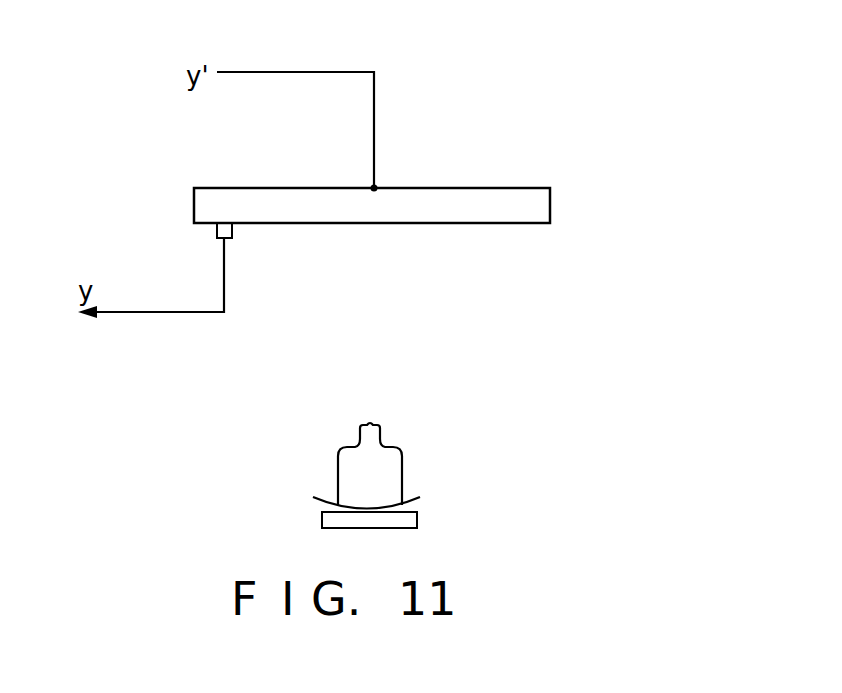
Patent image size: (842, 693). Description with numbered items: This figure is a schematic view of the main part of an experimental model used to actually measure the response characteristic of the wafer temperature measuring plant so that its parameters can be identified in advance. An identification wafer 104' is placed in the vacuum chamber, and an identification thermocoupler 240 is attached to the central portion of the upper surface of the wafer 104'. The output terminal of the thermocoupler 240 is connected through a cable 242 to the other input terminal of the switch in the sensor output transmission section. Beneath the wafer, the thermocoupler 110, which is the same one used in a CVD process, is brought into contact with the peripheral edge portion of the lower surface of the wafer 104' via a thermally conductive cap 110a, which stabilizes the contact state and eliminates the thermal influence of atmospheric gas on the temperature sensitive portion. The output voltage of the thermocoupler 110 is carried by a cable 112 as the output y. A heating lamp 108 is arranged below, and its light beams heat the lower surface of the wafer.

The cable 242 is at (304, 70).
The identification thermocoupler 240 is at (378, 186).
The identification wafer 104' is at (386, 175).
The thermocoupler 110 is at (212, 232).
The thermally conductive cap 110a is at (232, 232).
The cable 112 is at (140, 314).
The heating lamp 108 is at (405, 462).